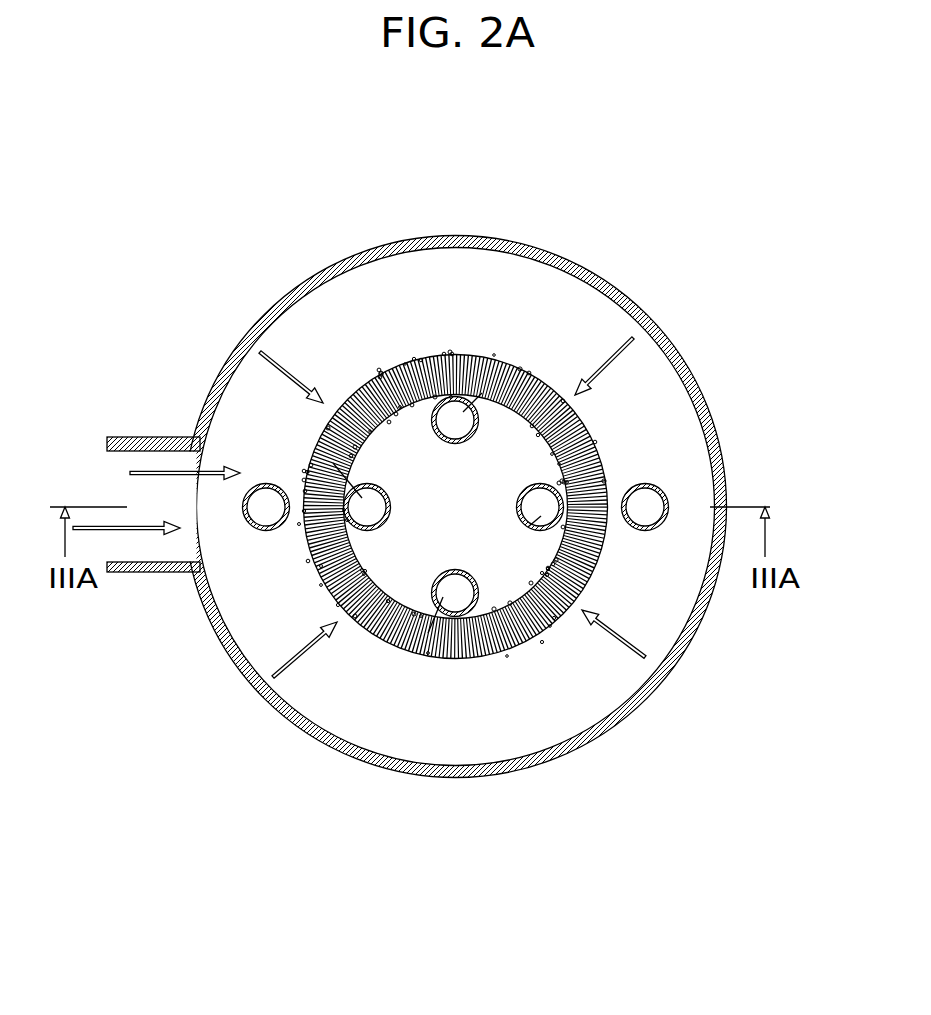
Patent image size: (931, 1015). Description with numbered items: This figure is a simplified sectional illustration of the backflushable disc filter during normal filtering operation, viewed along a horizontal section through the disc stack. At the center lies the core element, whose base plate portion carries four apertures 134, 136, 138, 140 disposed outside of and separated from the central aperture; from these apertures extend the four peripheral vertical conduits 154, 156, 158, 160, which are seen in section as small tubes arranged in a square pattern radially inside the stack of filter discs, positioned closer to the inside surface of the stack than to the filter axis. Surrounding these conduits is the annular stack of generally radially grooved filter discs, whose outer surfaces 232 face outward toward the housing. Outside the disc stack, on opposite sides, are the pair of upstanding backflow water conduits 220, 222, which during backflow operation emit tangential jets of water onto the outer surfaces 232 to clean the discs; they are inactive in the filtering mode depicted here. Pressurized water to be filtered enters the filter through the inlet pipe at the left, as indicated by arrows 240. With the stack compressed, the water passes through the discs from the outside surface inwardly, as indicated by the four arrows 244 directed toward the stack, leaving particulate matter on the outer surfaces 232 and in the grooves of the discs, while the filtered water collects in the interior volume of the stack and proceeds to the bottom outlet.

The aperture 134 is at (482, 393).
The aperture 136 is at (333, 463).
The aperture 138 is at (428, 633).
The aperture 140 is at (528, 527).
The peripheral vertical conduit 154 is at (439, 436).
The peripheral vertical conduit 156 is at (372, 530).
The peripheral vertical conduit 158 is at (447, 568).
The peripheral vertical conduit 160 is at (530, 492).
The upstanding backflow water conduit 220 is at (259, 531).
The upstanding backflow water conduit 222 is at (650, 531).
The outer surfaces of the stack of filter discs 232 is at (505, 648).
The arrows indicating supply of pressurized water 240 is at (157, 528).
The arrows indicating inward water flow through the discs 244 is at (285, 363).